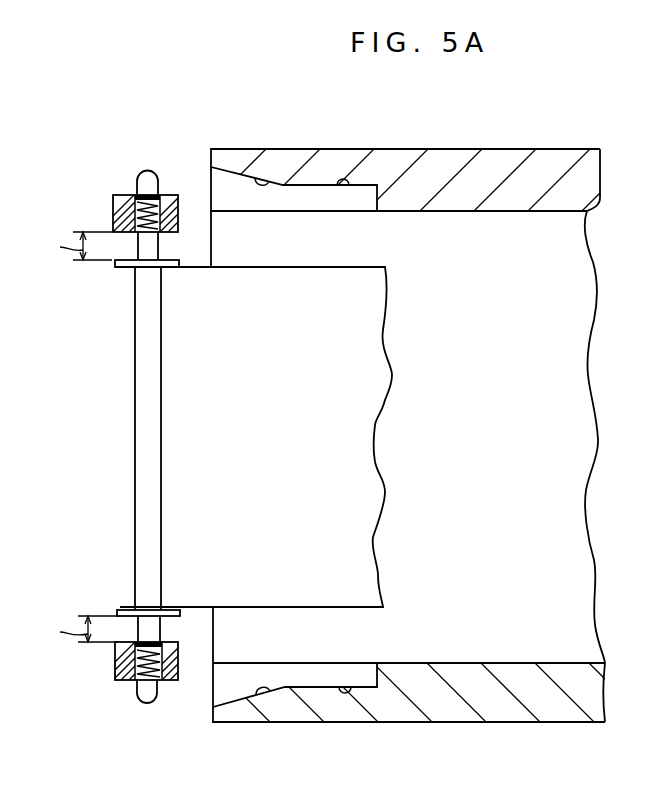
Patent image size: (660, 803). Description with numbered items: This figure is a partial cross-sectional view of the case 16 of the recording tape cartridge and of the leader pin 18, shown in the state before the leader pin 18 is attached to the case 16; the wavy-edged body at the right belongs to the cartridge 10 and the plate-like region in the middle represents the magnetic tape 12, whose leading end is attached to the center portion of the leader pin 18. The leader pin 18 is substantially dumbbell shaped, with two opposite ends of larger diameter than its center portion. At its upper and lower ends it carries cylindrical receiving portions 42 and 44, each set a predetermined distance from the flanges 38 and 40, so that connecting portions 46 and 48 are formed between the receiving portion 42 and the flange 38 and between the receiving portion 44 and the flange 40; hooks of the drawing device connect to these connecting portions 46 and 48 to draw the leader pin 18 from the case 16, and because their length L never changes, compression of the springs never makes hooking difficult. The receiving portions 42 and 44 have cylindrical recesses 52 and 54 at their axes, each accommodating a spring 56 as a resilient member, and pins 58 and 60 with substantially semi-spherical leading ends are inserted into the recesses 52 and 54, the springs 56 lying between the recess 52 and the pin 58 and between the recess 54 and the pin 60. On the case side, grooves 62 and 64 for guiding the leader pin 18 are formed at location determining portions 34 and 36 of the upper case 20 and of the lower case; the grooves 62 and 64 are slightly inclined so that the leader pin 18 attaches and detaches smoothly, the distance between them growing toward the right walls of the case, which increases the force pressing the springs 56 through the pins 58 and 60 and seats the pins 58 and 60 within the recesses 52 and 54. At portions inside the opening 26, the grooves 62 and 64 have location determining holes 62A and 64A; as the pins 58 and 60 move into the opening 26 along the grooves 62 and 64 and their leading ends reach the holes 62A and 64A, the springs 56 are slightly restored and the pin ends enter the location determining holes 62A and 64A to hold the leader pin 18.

The apparatus body 10 is at (568, 130).
The magnetic tape 12 is at (392, 386).
The case 16 is at (424, 186).
The leader pin 18 is at (163, 163).
The upper case 20 is at (424, 186).
The opening 26 is at (408, 688).
The location determining portion 34 is at (322, 190).
The location determining portion 36 is at (306, 678).
The flange 38 is at (127, 268).
The flange 40 is at (130, 607).
The receiving portion 42 is at (113, 215).
The receiving portion 44 is at (115, 684).
The connecting portion 46 is at (147, 248).
The connecting portion 48 is at (160, 629).
The recess 52 is at (178, 203).
The recess 54 is at (178, 667).
The spring 56 is at (113, 200).
The pin 58 is at (143, 178).
The pin 60 is at (147, 698).
The groove 62 is at (268, 182).
The location determining hole 62A is at (347, 178).
The groove 64 is at (272, 698).
The location determining hole 64A is at (347, 698).